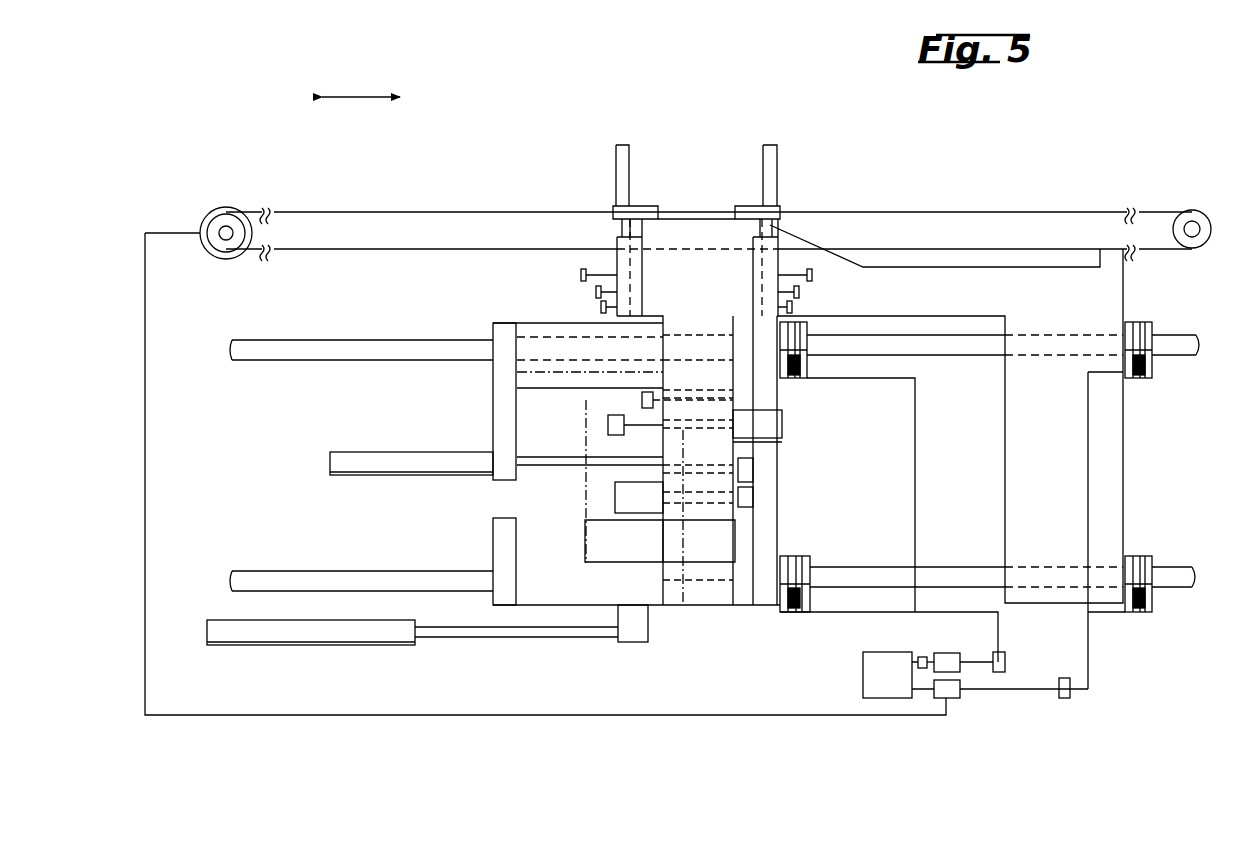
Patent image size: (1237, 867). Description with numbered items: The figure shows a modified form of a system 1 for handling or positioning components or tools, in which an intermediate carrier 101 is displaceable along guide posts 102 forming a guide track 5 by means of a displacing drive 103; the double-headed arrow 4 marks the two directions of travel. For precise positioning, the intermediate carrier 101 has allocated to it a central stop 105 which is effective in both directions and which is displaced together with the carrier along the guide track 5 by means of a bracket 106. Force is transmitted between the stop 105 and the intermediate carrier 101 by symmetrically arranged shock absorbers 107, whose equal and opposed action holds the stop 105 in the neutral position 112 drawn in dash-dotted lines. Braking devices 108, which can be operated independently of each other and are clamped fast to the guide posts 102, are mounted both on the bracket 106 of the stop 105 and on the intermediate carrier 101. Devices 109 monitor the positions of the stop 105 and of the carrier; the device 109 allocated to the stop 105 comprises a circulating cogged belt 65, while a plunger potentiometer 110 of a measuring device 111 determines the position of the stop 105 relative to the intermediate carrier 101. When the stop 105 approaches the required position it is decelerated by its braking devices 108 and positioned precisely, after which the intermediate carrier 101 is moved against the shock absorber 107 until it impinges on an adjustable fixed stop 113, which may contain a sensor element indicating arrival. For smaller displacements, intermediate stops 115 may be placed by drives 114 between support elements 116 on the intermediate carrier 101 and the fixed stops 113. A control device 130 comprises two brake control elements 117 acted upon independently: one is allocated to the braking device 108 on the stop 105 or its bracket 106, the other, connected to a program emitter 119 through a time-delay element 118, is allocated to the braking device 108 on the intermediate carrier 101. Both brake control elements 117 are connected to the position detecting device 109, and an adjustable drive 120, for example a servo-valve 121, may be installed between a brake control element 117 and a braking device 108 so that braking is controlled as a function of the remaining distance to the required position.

The system 1 is at (757, 82).
The direction of movement 4 is at (360, 97).
The guide track 5 is at (233, 366).
The circulating cogged belt 65 is at (950, 210).
The intermediate carrier 101 is at (737, 624).
The guide posts 102 is at (256, 343).
The displacing drive 103 is at (215, 625).
The stop 105 is at (692, 240).
The bracket 106 is at (1113, 500).
The shock absorbers 107 is at (615, 497).
The braking devices 108 is at (1153, 311).
The position detecting devices 109 is at (372, 190).
The plunger potentiometer 110 is at (373, 454).
The measuring device 111 is at (398, 478).
The neutral position 112 is at (586, 440).
The fixed stop 113 is at (641, 400).
The drives 114 is at (618, 172).
The intermediate stops 115 is at (601, 307).
The support elements 116 is at (520, 418).
The brake control elements 117 is at (957, 684).
The time-delay element 118 is at (922, 657).
The program emitter 119 is at (870, 655).
The adjustable drive 120 is at (1012, 660).
The servo-valve 121 is at (1057, 690).
The control device 130 is at (977, 704).